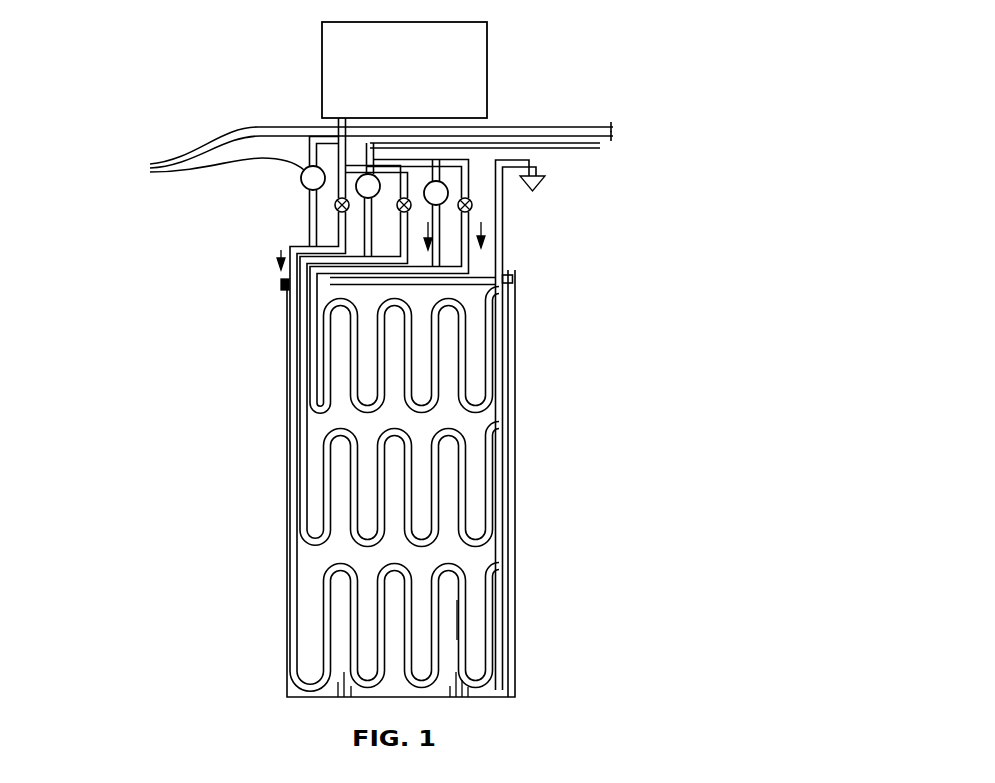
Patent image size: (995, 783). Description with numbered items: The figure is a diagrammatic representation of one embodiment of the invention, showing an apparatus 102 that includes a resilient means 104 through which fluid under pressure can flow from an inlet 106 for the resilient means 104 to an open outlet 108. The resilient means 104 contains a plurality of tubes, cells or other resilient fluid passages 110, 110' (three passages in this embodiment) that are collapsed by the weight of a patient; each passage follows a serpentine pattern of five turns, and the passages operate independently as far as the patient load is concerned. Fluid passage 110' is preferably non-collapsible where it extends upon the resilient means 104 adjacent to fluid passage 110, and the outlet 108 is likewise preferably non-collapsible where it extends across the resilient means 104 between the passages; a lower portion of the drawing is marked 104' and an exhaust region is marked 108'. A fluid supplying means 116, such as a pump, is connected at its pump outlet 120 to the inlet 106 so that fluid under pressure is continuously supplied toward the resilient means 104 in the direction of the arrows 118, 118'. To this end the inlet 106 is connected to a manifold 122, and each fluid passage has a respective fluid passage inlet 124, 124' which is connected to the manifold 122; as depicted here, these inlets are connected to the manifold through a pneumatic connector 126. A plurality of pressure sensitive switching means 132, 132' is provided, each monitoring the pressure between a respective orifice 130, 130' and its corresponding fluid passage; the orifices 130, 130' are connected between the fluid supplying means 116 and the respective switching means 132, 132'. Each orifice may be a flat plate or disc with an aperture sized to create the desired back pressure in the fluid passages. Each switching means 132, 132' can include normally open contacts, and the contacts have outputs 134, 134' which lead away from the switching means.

The apparatus 102 is at (563, 421).
The resilient means 104 is at (421, 483).
The housing bottom drain 104' is at (252, 689).
The inlet 106 is at (312, 142).
The outlet 108 is at (493, 235).
The exhaust outlet 108' is at (549, 171).
The fluid passage 110 is at (366, 314).
The fluid passage 110' is at (367, 379).
The fluid supplying means 116 is at (321, 64).
The arrow 118 is at (506, 425).
The arrow 118' is at (528, 288).
The pump outlet 120 is at (338, 125).
The manifold 122 is at (436, 181).
The fluid passage inlet 124 is at (271, 346).
The fluid passage inlet 124' is at (254, 329).
The pneumatic connector 126 is at (281, 284).
The orifice 130 is at (496, 208).
The orifice 130' is at (400, 175).
The pressure sensitive switching means 132 is at (476, 182).
The pressure sensitive switching means 132' is at (373, 200).
The output 134 is at (491, 172).
The output 134' is at (381, 99).